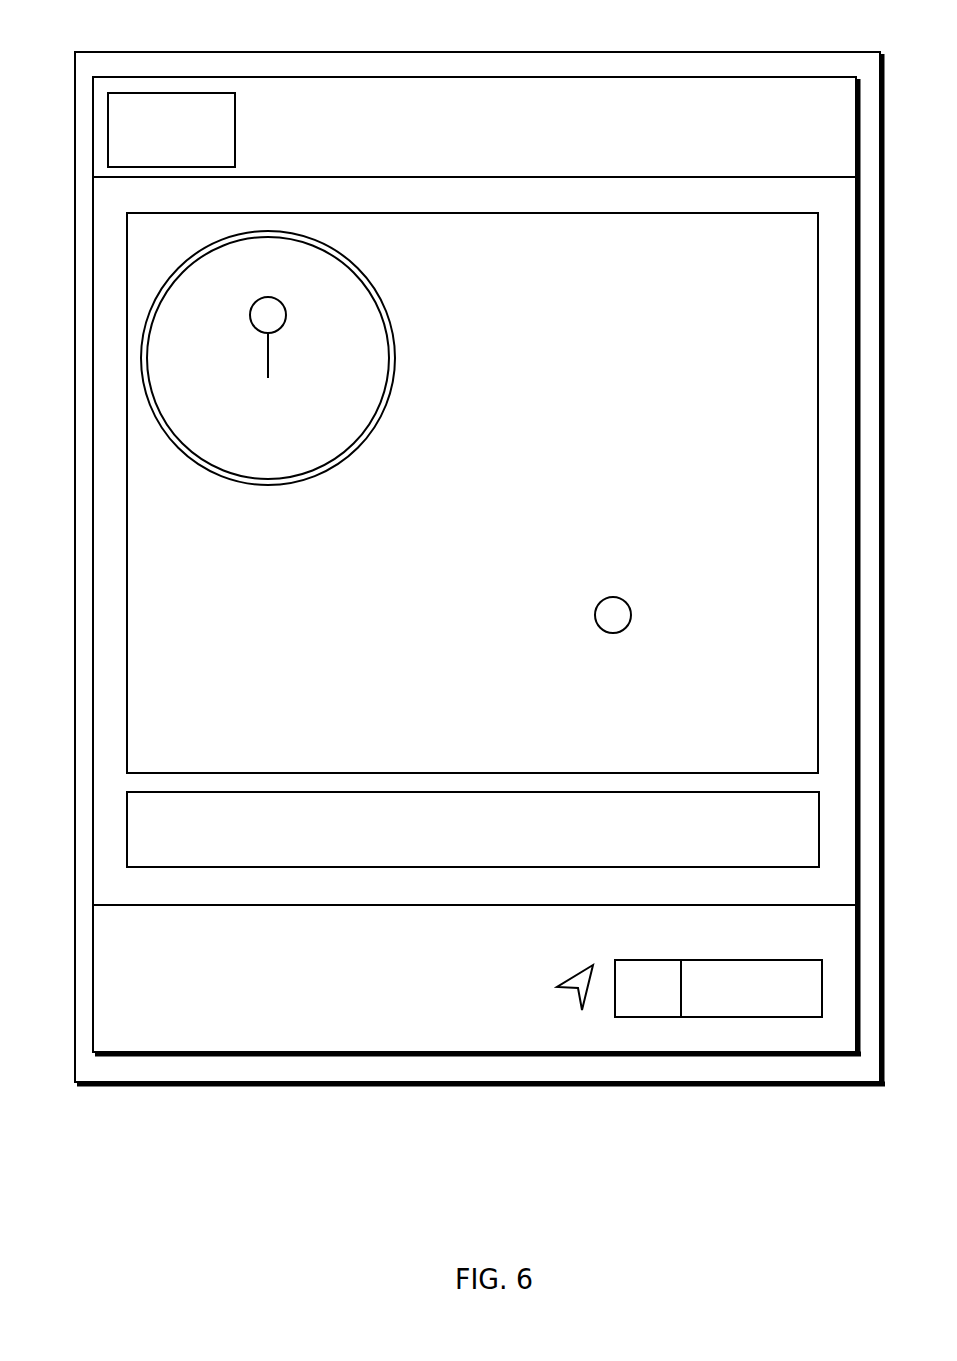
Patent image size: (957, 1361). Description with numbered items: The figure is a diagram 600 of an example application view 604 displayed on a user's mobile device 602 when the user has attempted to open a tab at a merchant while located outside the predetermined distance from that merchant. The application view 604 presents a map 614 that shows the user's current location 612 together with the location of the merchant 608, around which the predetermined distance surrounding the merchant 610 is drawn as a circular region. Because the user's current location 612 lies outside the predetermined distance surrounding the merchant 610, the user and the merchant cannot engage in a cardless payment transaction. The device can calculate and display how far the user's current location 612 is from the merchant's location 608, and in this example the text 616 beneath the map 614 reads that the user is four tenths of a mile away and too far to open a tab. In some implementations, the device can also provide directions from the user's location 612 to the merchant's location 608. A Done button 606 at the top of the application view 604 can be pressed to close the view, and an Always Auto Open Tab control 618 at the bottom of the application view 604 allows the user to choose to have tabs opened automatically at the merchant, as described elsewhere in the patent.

The diagram 600 is at (111, 1168).
The mobile device 602 is at (317, 52).
The application view 604 is at (408, 77).
The Done button 606 is at (235, 126).
The location of the merchant 608 is at (268, 359).
The predetermined distance surrounding the merchant 610 is at (395, 362).
The user's current location 612 is at (631, 614).
The map 614 is at (127, 667).
The distance text 616 is at (738, 831).
The Always Auto Open Tab option 618 is at (717, 960).